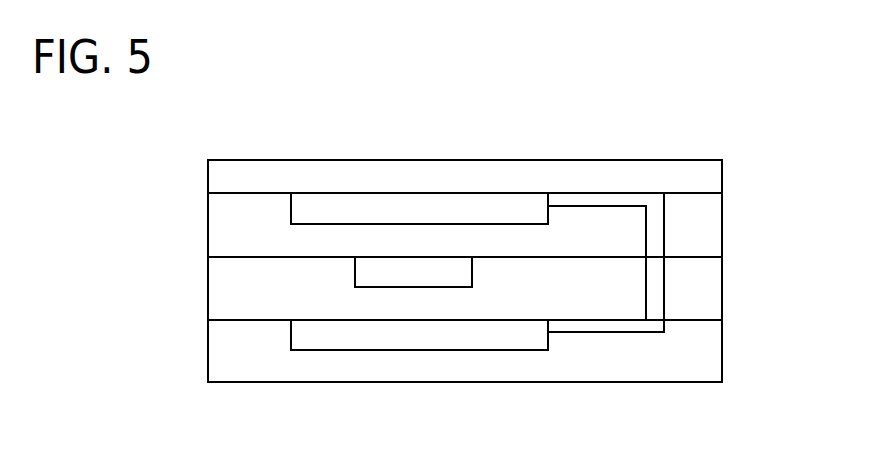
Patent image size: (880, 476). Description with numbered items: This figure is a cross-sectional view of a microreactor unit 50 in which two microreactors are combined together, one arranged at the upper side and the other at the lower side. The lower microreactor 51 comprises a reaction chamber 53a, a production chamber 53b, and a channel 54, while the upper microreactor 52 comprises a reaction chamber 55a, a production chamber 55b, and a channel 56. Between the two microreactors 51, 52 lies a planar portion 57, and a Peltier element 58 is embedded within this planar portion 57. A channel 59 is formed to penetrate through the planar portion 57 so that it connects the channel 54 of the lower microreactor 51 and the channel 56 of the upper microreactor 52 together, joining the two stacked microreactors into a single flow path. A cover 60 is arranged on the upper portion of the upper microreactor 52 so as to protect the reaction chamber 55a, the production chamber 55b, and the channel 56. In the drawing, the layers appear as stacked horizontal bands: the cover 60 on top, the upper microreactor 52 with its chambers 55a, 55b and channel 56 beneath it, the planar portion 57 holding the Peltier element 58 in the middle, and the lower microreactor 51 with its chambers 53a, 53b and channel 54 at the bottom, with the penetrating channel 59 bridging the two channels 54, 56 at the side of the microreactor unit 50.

The microreactor unit 50 is at (778, 270).
The microreactor 51 is at (729, 356).
The microreactor 52 is at (728, 212).
The reaction chamber 53a is at (499, 350).
The production chamber 53b is at (419, 335).
The channel 54 is at (632, 332).
The reaction chamber 55a is at (504, 193).
The production chamber 55b is at (419, 208).
The channel 56 is at (638, 193).
The planar portion 57 is at (207, 287).
The Peltier element 58 is at (355, 270).
The channel 59 is at (664, 288).
The cover 60 is at (697, 160).